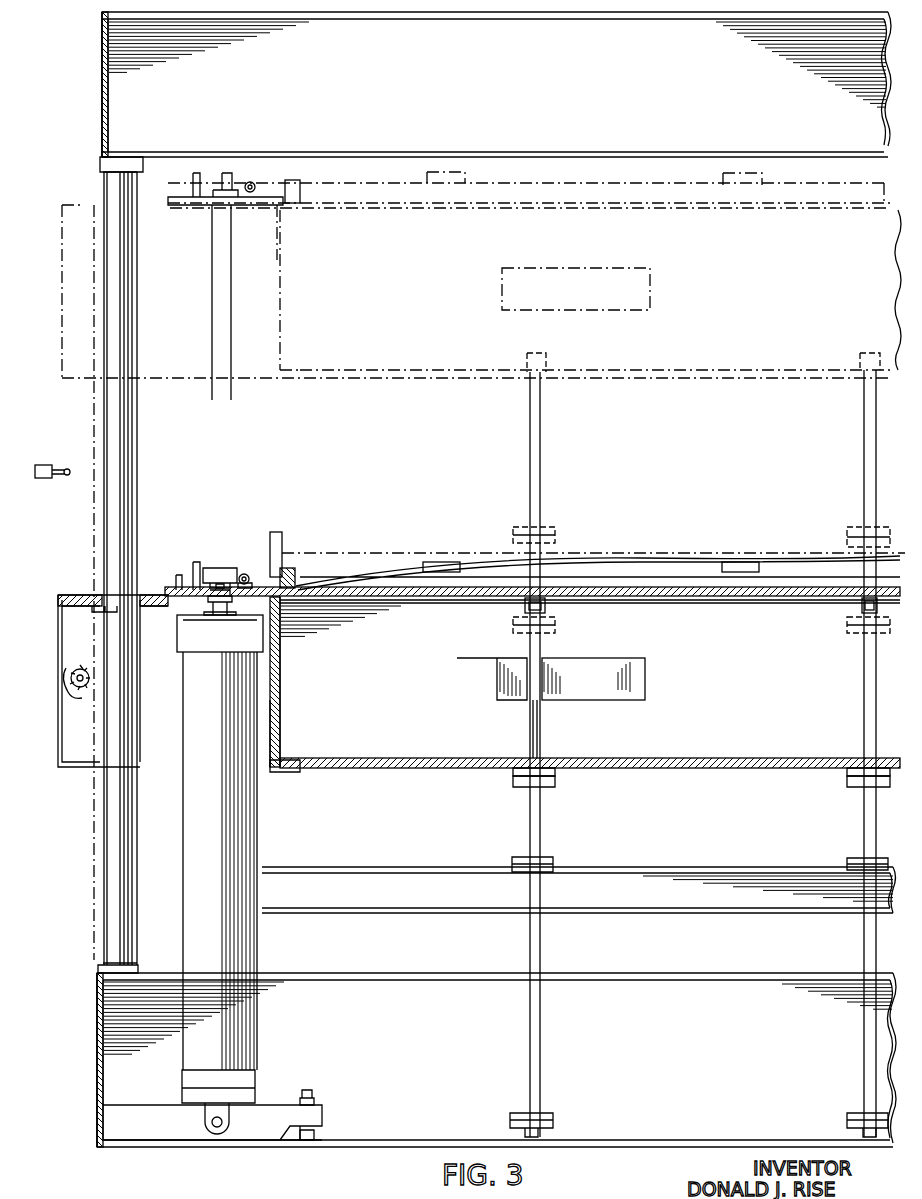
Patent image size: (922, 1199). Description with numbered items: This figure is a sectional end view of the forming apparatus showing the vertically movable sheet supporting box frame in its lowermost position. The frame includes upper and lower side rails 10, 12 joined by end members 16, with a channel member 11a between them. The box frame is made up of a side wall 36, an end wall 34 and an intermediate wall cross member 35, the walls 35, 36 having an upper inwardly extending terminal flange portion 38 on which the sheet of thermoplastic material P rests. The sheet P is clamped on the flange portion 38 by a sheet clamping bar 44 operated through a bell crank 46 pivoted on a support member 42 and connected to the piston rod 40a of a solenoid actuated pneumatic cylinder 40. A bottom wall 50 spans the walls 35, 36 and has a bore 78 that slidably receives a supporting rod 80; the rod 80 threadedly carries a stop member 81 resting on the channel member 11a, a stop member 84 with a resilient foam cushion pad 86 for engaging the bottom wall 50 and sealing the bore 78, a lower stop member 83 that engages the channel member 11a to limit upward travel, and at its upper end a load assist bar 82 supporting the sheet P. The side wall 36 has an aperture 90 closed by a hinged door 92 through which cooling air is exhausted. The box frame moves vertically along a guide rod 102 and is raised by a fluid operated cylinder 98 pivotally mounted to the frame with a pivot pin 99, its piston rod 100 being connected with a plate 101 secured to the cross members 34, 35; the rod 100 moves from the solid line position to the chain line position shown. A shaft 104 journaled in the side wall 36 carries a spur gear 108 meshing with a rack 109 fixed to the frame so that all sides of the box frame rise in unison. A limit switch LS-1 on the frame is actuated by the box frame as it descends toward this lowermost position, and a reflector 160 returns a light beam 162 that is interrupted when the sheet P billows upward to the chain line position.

The upper side rail 10 is at (102, 78).
The lower side rail 12 is at (97, 1048).
The end member 16 is at (586, 92).
The channel member 11a is at (636, 902).
The end wall 34 is at (61, 598).
The intermediate wall cross member 35 is at (283, 696).
The side wall 36 is at (423, 656).
The terminal flange portion 38 is at (288, 615).
The pneumatic cylinder 40 is at (194, 188).
The piston rod 40a is at (222, 568).
The support member 42 is at (196, 604).
The sheet clamping bar 44 is at (300, 580).
The bell crank 46 is at (244, 574).
The bottom wall 50 is at (444, 772).
The bore 78 is at (540, 758).
The supporting rod 80 is at (530, 823).
The stop member 81 is at (556, 865).
The load assist bar 82 is at (546, 362).
The stop member 83 is at (553, 1121).
The stop member 84 is at (545, 787).
The resilient foam cushion pad 86 is at (555, 774).
The aperture 90 is at (640, 678).
The hinged door 92 is at (590, 665).
The fluid operated cylinder 98 is at (248, 1024).
The pivot pin 99 is at (212, 1122).
The piston rod 100 is at (212, 330).
The plate 101 is at (180, 585).
The guide rod 102 is at (128, 455).
The shaft 104 is at (72, 698).
The spur gear 108 is at (91, 680).
The rack 109 is at (94, 416).
The reflector 160 is at (282, 542).
The beam 162 is at (400, 554).
The sheet of thermoplastic material P is at (692, 552).
The limit switch LS-1 is at (44, 478).